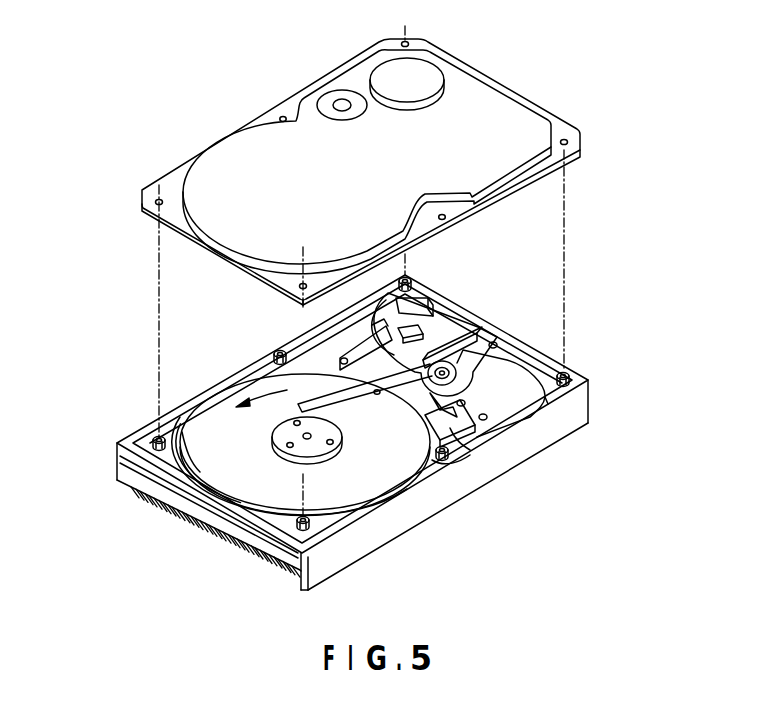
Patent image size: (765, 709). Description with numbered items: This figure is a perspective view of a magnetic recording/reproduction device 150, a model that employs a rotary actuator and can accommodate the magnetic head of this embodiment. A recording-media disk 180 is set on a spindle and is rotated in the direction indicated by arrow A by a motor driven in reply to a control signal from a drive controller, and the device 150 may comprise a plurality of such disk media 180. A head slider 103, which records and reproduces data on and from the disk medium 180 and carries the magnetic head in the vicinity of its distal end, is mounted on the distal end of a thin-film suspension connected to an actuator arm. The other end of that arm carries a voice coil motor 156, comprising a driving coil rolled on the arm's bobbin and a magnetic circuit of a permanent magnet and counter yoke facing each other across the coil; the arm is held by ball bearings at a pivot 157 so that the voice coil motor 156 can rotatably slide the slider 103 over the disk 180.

The magnetic recording/reproduction device 150 is at (253, 89).
The voice coil motor 156 is at (495, 405).
The pivot bearing 157 is at (442, 362).
The recording-media disk 180 is at (213, 417).
The head slider 103 is at (297, 407).